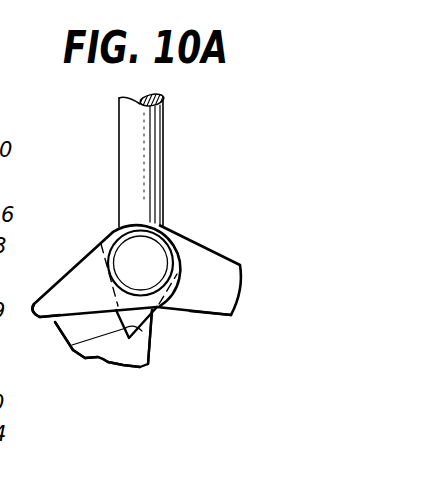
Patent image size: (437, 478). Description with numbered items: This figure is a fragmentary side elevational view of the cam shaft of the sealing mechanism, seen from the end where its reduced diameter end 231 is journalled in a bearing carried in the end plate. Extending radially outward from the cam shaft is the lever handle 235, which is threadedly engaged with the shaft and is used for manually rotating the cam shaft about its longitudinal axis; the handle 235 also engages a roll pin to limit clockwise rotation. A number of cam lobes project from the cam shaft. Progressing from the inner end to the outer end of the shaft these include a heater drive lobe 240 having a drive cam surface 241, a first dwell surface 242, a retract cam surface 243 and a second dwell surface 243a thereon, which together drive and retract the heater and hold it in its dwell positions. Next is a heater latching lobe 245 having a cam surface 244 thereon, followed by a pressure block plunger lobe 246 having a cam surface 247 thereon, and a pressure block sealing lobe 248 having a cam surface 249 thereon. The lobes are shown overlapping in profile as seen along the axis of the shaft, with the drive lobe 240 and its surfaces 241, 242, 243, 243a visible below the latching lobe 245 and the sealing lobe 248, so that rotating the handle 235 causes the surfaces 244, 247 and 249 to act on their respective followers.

The lever handle 235 is at (155, 143).
The reduced diameter end 231 is at (145, 257).
The heater latching lobe 245 is at (213, 260).
The pressure block sealing lobe 248 is at (60, 290).
The cam surface 247 is at (157, 321).
The cam surface 244 is at (210, 315).
The drive cam surface 241 is at (153, 343).
The heater drive lobe 240 is at (146, 363).
The first dwell surface 242 is at (120, 366).
The retract cam surface 243 is at (98, 359).
The second dwell surface 243a is at (85, 358).
The pressure block plunger lobe 246 is at (73, 343).
The cam surface 249 is at (43, 319).